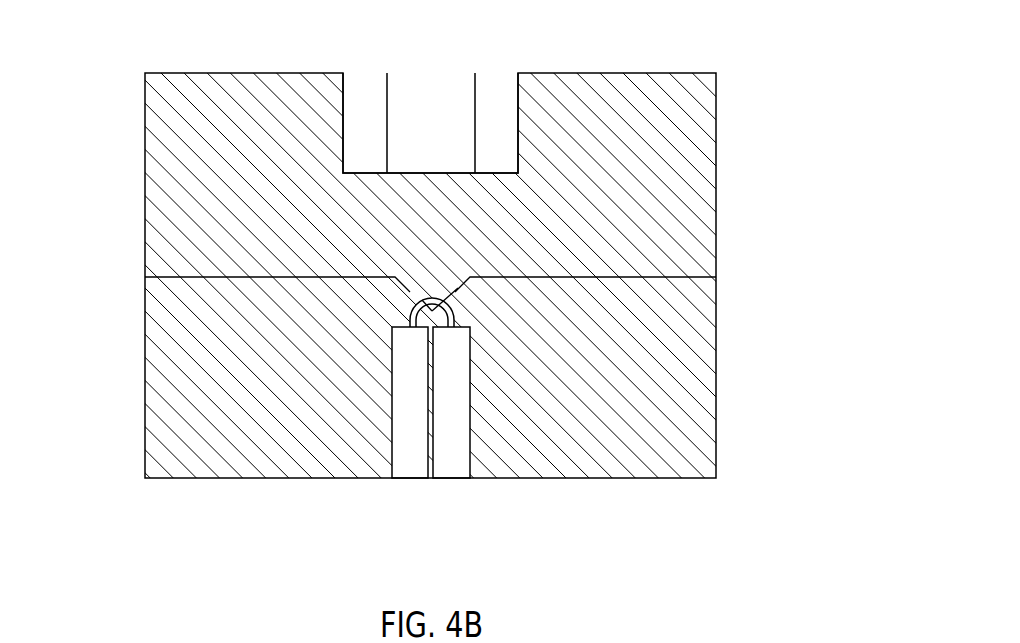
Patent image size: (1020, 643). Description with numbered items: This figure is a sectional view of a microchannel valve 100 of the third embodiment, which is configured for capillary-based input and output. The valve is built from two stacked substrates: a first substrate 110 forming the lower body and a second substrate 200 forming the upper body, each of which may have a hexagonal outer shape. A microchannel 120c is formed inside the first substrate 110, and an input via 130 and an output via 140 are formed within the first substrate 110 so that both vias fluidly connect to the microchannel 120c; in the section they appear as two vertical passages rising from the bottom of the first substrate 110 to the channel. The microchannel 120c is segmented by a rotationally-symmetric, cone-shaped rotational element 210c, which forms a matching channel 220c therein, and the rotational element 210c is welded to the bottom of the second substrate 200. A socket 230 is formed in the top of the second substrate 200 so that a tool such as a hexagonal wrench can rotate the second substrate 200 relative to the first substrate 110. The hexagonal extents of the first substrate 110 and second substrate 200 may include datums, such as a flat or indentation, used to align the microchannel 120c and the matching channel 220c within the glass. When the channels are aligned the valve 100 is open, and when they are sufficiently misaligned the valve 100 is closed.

The microchannel valve 100 is at (761, 47).
The second substrate 200 is at (145, 147).
The first substrate 110 is at (145, 410).
The socket 230 is at (372, 92).
The matching channel 220c is at (428, 297).
The rotational element 210c is at (458, 290).
The microchannel 120c is at (408, 315).
The input via 130 is at (412, 462).
The output via 140 is at (448, 462).